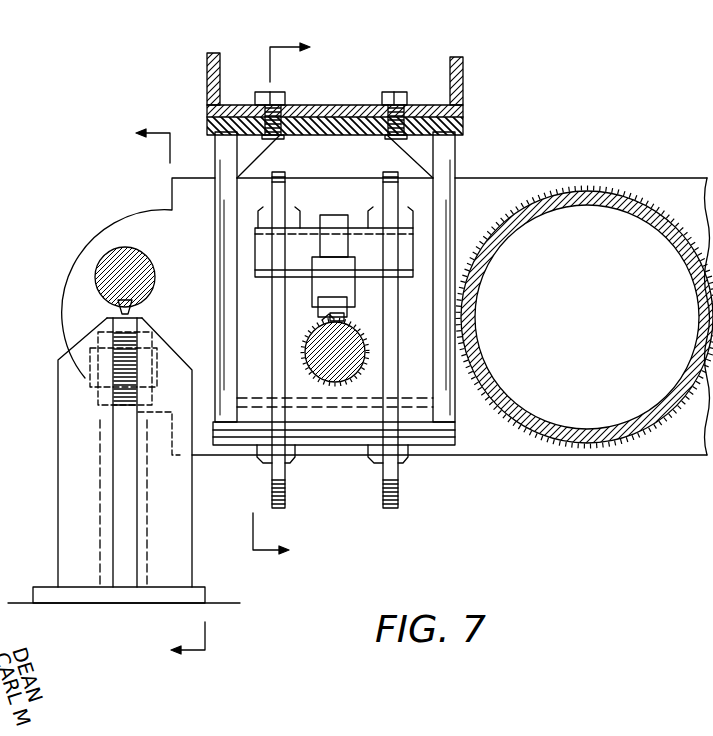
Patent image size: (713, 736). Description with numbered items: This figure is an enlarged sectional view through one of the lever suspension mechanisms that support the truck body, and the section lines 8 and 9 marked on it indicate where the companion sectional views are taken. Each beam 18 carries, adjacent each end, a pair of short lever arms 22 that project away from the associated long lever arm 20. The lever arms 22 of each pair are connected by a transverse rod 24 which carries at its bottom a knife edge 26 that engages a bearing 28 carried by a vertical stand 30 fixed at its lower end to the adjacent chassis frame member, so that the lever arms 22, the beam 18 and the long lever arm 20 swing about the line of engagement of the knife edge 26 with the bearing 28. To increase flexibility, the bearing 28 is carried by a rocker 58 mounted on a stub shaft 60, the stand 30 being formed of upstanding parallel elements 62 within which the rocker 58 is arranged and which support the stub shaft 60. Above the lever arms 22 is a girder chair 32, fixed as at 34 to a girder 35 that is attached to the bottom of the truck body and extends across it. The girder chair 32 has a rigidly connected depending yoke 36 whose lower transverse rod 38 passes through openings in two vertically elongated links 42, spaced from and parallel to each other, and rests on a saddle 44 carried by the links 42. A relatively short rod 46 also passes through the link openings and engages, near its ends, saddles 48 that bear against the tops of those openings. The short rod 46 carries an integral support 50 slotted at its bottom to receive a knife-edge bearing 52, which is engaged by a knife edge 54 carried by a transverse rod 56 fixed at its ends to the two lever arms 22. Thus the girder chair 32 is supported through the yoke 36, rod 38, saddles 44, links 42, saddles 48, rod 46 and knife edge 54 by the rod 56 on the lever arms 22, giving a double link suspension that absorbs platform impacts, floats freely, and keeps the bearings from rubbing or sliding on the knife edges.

The section line 8- 8 is at (290, 299).
The section line 9- 9 is at (161, 390).
The beam 18 is at (660, 211).
The long lever arm 20 is at (521, 188).
The lever arm 22 is at (386, 300).
The transverse rod 24 is at (143, 258).
The knife edge 26 is at (114, 312).
The bearing 28 is at (148, 301).
The vertical stand 30 is at (120, 459).
The girder chair 32 is at (320, 82).
The fixing 34 is at (382, 92).
The girder 35 is at (448, 66).
The yoke 36 is at (222, 158).
The lower transverse rod 38 is at (351, 434).
The link 42 is at (335, 324).
The saddle 44 is at (262, 469).
The short rod 46 is at (411, 268).
The saddle 48 is at (264, 213).
The support 50 is at (346, 200).
The knife-edge bearing 52 is at (320, 316).
The knife edge 54 is at (344, 321).
The transverse rod 56 is at (348, 366).
The rocker 58 is at (114, 407).
The stub shaft 60 is at (89, 354).
The upstanding parallel elements 62 is at (58, 393).